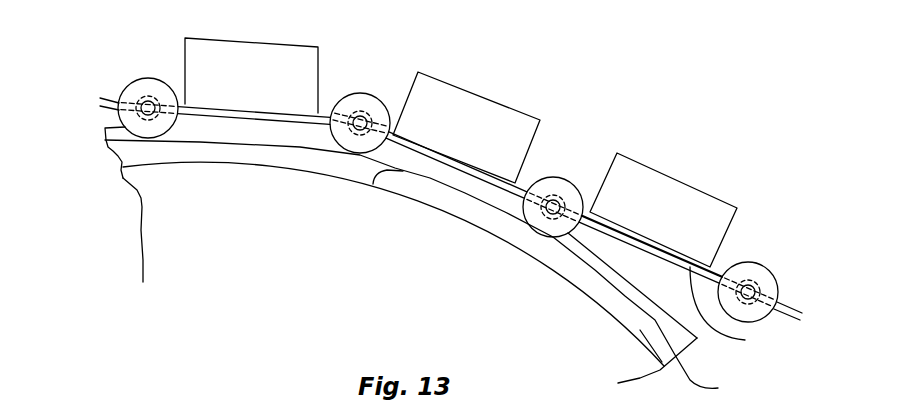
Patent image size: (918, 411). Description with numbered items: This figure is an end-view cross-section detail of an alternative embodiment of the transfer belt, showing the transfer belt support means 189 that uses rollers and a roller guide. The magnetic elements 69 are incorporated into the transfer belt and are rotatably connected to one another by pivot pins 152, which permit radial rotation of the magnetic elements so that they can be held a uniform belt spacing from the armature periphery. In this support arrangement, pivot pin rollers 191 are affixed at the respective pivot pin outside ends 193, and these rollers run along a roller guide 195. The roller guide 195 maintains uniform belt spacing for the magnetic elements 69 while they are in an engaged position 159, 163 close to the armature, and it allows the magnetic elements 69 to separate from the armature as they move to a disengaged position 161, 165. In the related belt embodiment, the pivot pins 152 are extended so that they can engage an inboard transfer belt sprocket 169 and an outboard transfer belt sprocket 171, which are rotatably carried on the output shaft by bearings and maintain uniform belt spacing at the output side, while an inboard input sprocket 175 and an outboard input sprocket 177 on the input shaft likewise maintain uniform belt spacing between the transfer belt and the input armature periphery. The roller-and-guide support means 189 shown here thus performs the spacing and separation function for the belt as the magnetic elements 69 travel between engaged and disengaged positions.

The magnetic element 69 is at (477, 112).
The pivot pin 152 is at (366, 112).
The engaged position 159 is at (451, 168).
The engaged position 163 is at (331, 112).
The disengaged position 161 is at (754, 309).
The disengaged position 165 is at (754, 309).
The inboard transfer belt sprocket 169 is at (87, 171).
The outboard transfer belt sprocket 171 is at (123, 156).
The inboard input sprocket 175 is at (103, 230).
The outboard input sprocket 177 is at (137, 190).
The transfer belt support means 189 is at (374, 186).
The pivot pin roller 191 is at (571, 180).
The pivot pin outside end 193 is at (749, 280).
The roller guide 195 is at (434, 269).